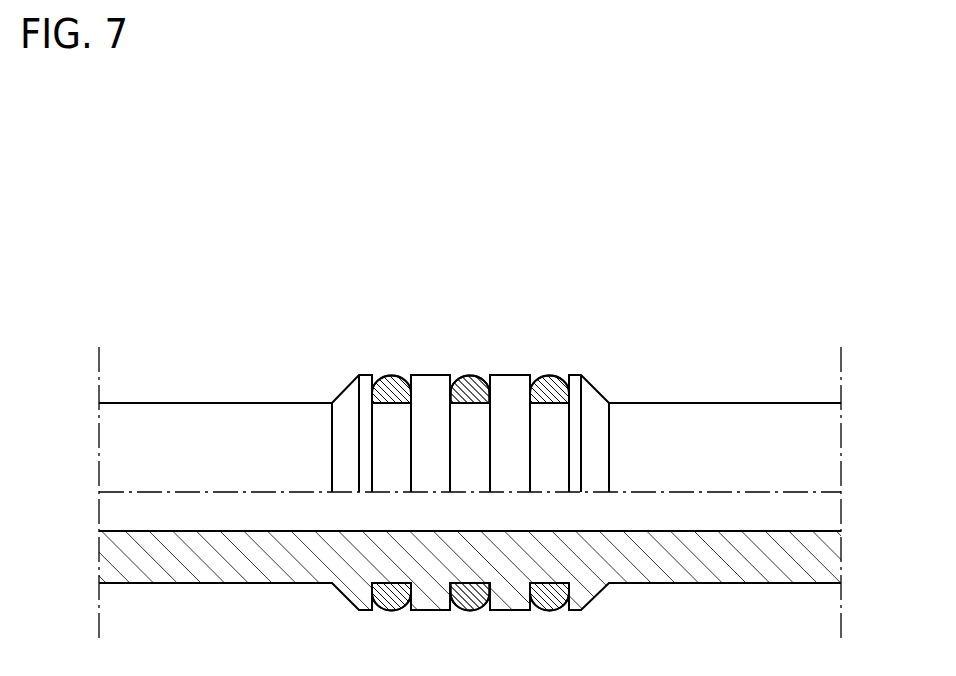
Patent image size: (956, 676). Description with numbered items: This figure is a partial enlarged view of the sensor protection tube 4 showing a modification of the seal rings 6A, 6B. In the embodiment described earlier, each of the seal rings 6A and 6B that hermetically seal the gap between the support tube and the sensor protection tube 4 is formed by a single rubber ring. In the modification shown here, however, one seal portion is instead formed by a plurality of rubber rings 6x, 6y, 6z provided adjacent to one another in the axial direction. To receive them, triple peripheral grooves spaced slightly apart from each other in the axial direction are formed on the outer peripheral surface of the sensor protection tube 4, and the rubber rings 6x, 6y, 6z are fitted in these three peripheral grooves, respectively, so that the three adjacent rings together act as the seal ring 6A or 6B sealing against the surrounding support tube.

The sensor protection tube 4 is at (736, 416).
The seal ring 6A is at (484, 427).
The seal ring 6B is at (484, 427).
The rubber ring 6x is at (393, 376).
The rubber ring 6y is at (470, 376).
The rubber ring 6z is at (563, 452).